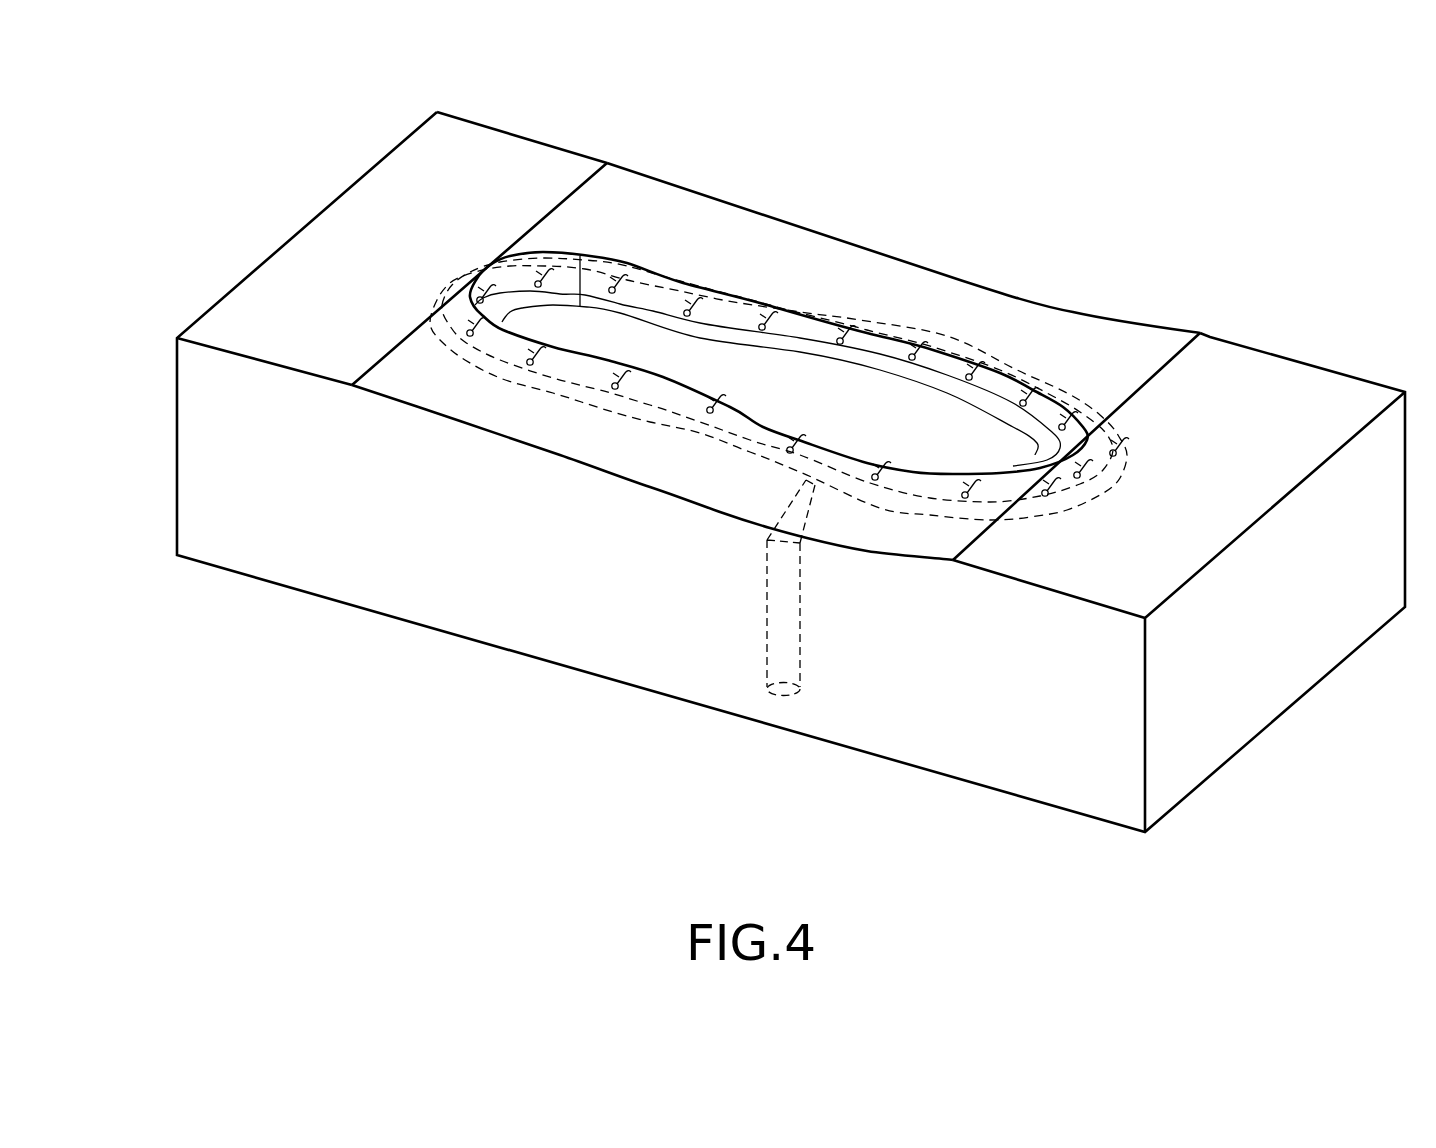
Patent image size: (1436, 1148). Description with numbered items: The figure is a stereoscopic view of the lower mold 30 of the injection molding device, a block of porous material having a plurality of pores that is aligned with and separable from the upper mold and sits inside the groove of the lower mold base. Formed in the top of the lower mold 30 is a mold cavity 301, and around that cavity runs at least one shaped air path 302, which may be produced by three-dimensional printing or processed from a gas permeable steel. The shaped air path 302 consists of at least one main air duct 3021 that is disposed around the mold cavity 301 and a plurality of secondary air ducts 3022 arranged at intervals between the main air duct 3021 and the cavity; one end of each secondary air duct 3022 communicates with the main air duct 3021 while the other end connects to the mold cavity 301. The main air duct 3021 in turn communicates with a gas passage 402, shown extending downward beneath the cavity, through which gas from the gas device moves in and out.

The lower mold 30 is at (233, 548).
The mold cavity 301 is at (620, 327).
The shaped air path 302 is at (823, 310).
The main air duct 3021 is at (955, 338).
The secondary air ducts 3022 is at (1028, 433).
The gas passage 402 is at (762, 646).